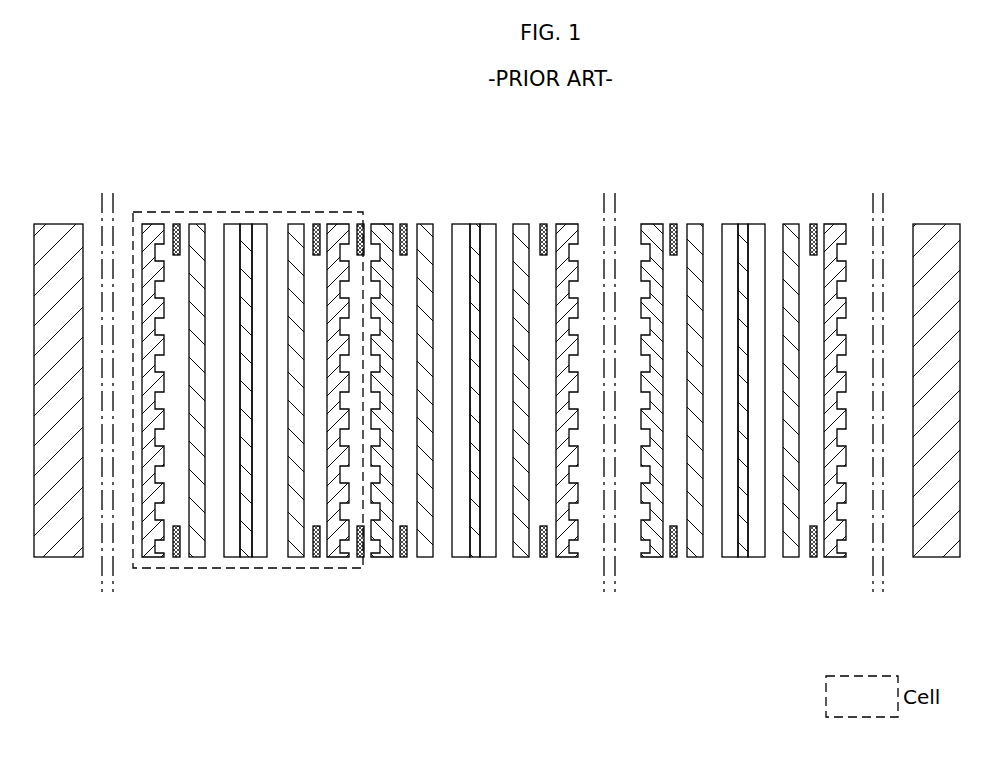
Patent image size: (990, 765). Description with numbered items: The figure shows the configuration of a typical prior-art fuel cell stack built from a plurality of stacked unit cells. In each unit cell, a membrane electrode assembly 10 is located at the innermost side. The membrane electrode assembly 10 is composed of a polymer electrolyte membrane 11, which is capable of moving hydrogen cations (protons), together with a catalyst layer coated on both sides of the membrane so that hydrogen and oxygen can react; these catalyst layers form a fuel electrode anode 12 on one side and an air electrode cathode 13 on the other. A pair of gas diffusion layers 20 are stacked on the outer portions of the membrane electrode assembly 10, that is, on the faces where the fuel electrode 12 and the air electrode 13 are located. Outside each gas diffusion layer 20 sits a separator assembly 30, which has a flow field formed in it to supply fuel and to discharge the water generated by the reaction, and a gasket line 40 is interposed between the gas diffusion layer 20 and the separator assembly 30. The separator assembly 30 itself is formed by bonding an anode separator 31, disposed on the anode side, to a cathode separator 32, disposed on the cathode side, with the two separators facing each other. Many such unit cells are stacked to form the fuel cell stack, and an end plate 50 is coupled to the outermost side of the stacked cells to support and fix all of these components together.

The membrane electrode assembly 10 is at (478, 463).
The polymer electrolyte membrane 11 is at (246, 557).
The fuel electrode anode 12 is at (260, 557).
The air electrode cathode 13 is at (233, 557).
The gas diffusion layer 20 is at (197, 557).
The separator assembly 30 is at (485, 467).
The anode separator 31 is at (150, 557).
The cathode separator 32 is at (340, 557).
The gasket line 40 is at (176, 224).
The end plate 50 is at (60, 557).